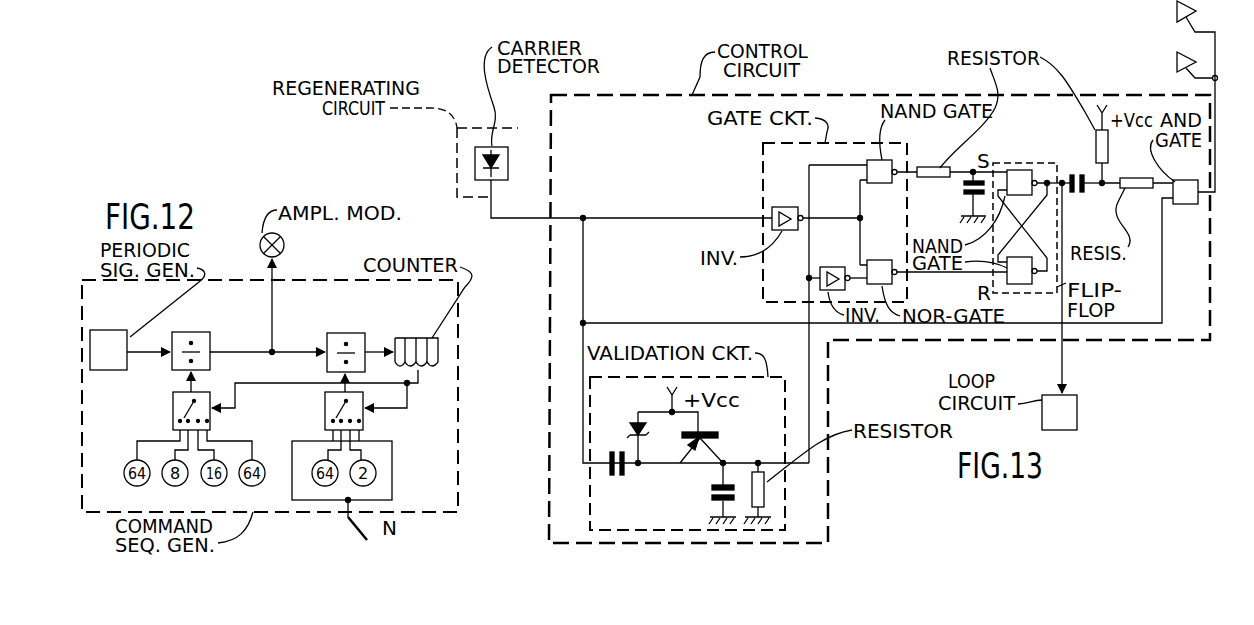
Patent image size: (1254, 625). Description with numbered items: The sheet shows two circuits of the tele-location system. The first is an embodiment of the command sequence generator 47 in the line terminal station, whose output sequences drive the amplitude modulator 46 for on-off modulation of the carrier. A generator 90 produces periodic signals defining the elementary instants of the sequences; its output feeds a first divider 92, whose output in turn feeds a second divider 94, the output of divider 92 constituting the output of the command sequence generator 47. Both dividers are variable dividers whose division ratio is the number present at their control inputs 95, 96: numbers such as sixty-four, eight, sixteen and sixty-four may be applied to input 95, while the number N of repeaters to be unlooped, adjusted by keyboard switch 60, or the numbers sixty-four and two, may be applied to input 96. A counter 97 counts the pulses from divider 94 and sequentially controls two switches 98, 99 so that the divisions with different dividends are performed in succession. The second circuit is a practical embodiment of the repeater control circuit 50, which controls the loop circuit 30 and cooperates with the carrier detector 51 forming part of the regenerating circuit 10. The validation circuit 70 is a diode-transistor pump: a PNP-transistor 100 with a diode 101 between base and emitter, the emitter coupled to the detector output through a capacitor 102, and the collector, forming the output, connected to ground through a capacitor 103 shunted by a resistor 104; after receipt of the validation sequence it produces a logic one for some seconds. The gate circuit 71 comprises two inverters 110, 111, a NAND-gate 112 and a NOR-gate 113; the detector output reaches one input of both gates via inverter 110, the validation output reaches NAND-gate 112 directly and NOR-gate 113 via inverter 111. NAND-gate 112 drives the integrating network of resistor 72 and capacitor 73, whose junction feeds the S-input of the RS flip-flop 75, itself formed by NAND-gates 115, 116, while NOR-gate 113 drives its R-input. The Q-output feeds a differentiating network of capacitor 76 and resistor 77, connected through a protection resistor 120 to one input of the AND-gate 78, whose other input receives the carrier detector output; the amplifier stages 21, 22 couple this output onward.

In FIG. 13, the regenerating circuit 10 is at (457, 137).
In FIG. 13, the output amplifier 21 is at (1197, 11).
In FIG. 13, the input amplifier 22 is at (1177, 62).
In FIG. 13, the loop circuit 30 is at (1070, 407).
In FIG. 12, the amplitude modulator 46 is at (284, 244).
In FIG. 12, the command sequence generator 47 is at (443, 448).
In FIG. 13, the control circuit 50 is at (917, 340).
In FIG. 13, the carrier detector 51 is at (475, 173).
In FIG. 12, the keyboard switch 60 is at (345, 522).
In FIG. 13, the validation circuit 70 is at (610, 518).
In FIG. 13, the gate circuit 71 is at (855, 147).
In FIG. 13, the resistor 72 is at (935, 167).
In FIG. 13, the capacitor 73 is at (962, 202).
In FIG. 13, the flip-flop 75 is at (1053, 163).
In FIG. 13, the capacitor 76 is at (1078, 196).
In FIG. 13, the resistor 77 is at (1108, 150).
In FIG. 13, the AND-gate 78 is at (1182, 180).
In FIG. 12, the generator 90 is at (95, 347).
In FIG. 12, the first divider 92 is at (180, 337).
In FIG. 12, the second divider 94 is at (360, 333).
In FIG. 12, the control input 95 is at (180, 372).
In FIG. 12, the control input 96 is at (337, 375).
In FIG. 12, the counter 97 is at (418, 338).
In FIG. 12, the switch 98 is at (173, 399).
In FIG. 12, the switch 99 is at (325, 404).
In FIG. 13, the PNP-transistor 100 is at (718, 434).
In FIG. 13, the diode 101 is at (632, 428).
In FIG. 13, the capacitor 102 is at (610, 479).
In FIG. 13, the capacitor 103 is at (712, 497).
In FIG. 13, the resistor 104 is at (766, 492).
In FIG. 13, the inverter 110 is at (790, 200).
In FIG. 13, the inverter 111 is at (833, 267).
In FIG. 13, the NAND-gate 112 is at (886, 187).
In FIG. 13, the NOR-gate 113 is at (883, 260).
In FIG. 13, the NAND-gate 115 is at (1013, 169).
In FIG. 13, the NAND-gate 116 is at (1023, 285).
In FIG. 13, the protection resistor 120 is at (1133, 188).